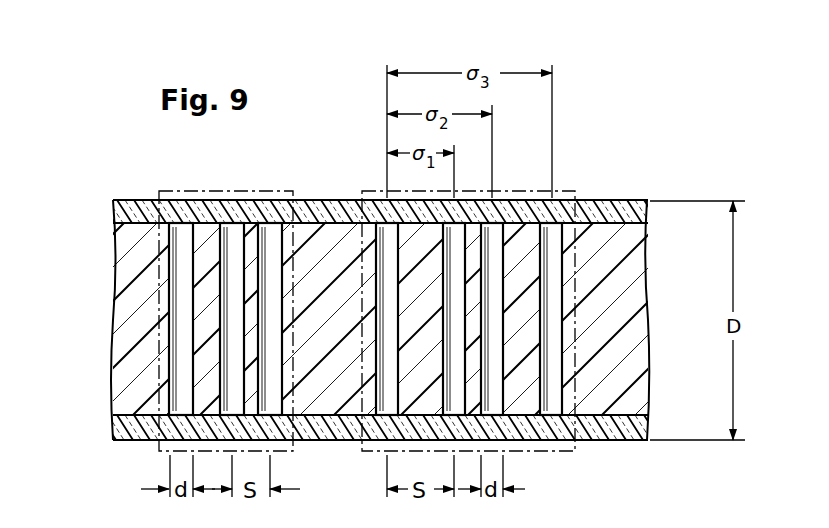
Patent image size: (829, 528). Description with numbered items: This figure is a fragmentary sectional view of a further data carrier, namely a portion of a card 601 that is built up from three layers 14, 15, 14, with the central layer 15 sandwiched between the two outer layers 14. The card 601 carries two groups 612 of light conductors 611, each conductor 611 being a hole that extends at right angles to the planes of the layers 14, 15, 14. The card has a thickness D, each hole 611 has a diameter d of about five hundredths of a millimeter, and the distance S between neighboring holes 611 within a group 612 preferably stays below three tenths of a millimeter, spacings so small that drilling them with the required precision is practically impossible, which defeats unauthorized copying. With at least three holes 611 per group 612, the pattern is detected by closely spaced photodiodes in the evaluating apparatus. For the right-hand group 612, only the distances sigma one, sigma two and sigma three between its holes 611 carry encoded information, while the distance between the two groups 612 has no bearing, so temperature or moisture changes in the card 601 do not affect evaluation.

The card 601 is at (634, 188).
The layer 14 is at (640, 212).
The layer 15 is at (622, 277).
The light conductor 611 is at (225, 287).
The group 612 is at (268, 190).